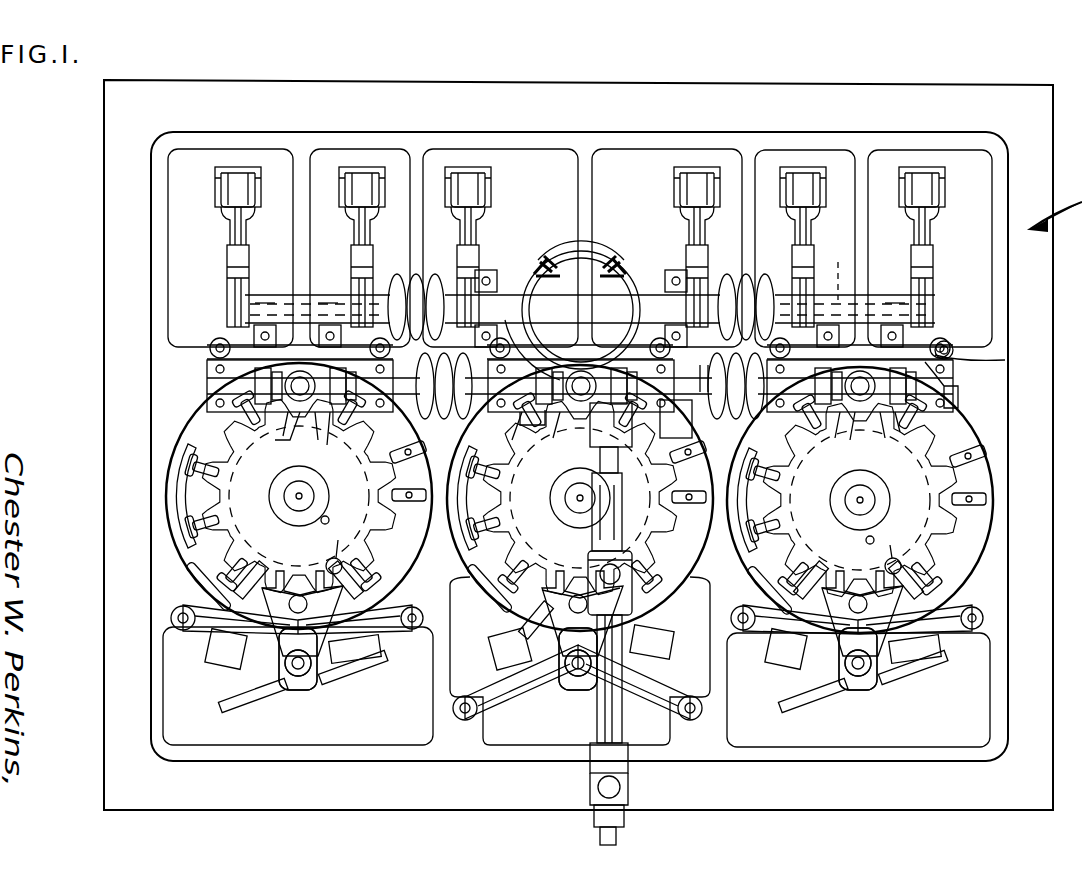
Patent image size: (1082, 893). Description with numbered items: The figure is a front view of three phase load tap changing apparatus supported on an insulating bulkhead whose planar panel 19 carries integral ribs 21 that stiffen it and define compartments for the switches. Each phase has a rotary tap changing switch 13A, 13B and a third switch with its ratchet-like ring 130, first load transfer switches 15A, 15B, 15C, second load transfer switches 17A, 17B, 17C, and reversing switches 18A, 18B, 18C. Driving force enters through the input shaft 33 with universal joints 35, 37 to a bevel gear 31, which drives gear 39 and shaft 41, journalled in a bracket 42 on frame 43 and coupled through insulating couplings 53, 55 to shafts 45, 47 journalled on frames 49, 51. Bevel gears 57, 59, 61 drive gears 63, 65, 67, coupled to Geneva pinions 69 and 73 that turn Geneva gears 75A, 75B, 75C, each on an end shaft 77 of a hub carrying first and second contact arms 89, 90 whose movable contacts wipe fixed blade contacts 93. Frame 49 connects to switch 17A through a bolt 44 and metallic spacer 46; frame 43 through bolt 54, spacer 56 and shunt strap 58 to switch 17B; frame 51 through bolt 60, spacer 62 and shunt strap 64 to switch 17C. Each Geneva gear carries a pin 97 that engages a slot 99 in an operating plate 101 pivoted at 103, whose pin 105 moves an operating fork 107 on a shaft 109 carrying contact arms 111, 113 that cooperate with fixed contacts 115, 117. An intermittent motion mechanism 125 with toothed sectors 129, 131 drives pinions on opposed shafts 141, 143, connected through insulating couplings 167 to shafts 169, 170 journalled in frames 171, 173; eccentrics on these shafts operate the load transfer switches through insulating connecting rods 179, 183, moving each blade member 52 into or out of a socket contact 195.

The panel 19 is at (628, 182).
The ribs 21 is at (428, 152).
The first load transfer switch 15A is at (222, 218).
The first load transfer switch 15B is at (492, 212).
The first load transfer switch 15C is at (335, 218).
The second load transfer switch 17A is at (783, 225).
The second load transfer switch 17B is at (678, 210).
The second load transfer switch 17C is at (940, 222).
The socket contact 195 is at (214, 196).
The blade member 52 is at (225, 264).
The Geneva driving pinion 69 is at (302, 345).
The shaft 169 is at (272, 292).
The frame 171 is at (324, 292).
The insulating coupling 167 is at (395, 278).
The insulating connecting rod 179 is at (488, 268).
The toothed sector 129 is at (538, 272).
The intermittent motion mechanism 125 is at (620, 268).
The toothed sector 131 is at (612, 264).
The shaft 141 is at (536, 300).
The shaft 143 is at (646, 302).
The shunt strap 58 is at (760, 345).
The Geneva driving pinion 73 is at (888, 345).
The shaft 170 is at (846, 267).
The frame 173 is at (886, 292).
The insulating connecting rod 183 is at (722, 330).
The frame 49 is at (214, 342).
The bevel gear 65 is at (640, 392).
The frame 51 is at (950, 372).
The bolt 60 is at (991, 361).
The spacer 62 is at (948, 342).
The shunt strap 64 is at (936, 336).
The bevel gear 57 is at (272, 428).
The bevel gear 31 is at (590, 425).
The bevel gear 67 is at (878, 415).
The insulating coupling 53 is at (452, 418).
The metallic spacer 56 is at (721, 386).
The bolt 54 is at (682, 422).
The insulating coupling 55 is at (719, 409).
The bevel gear 59 is at (568, 400).
The shaft 41 is at (515, 380).
The rotary tap changing switch 13A is at (170, 482).
The rotary tap changing switch 13B is at (480, 566).
The ratchet wheel 130 is at (984, 545).
The bracket 42 is at (579, 497).
The Geneva gear 75A is at (264, 510).
The Geneva gear 75B is at (541, 512).
The Geneva gear 75C is at (822, 512).
The end shaft 77 is at (300, 505).
The fixed blade contact 93 is at (185, 560).
The first contact arm 89 is at (1008, 448).
The second contact arm 90 is at (412, 505).
The bevel gear 63 is at (294, 434).
The shaft 45 is at (329, 441).
The frame 43 is at (510, 722).
The bevel gear 61 is at (855, 434).
The shaft 47 is at (907, 432).
The slot 99 is at (870, 542).
The pin 97 is at (621, 544).
The bevel gear 39 is at (621, 503).
The universal joint 35 is at (633, 585).
The input shaft 33 is at (617, 732).
The universal joint 37 is at (635, 785).
The reversing switch 18A is at (232, 700).
The reversing switch 18B is at (507, 677).
The reversing switch 18C is at (923, 706).
The metallic spacer 46 is at (408, 608).
The bolt 44 is at (692, 660).
The fixed contact 115 is at (212, 666).
The fixed contact 117 is at (385, 645).
The pin 105 is at (664, 675).
The reversing switch contact arm 111 is at (238, 705).
The reversing switch contact arm 113 is at (364, 660).
The shaft 109 is at (298, 678).
The operating fork 107 is at (322, 690).
The operating plate 101 is at (338, 670).
The pivot 103 is at (352, 570).